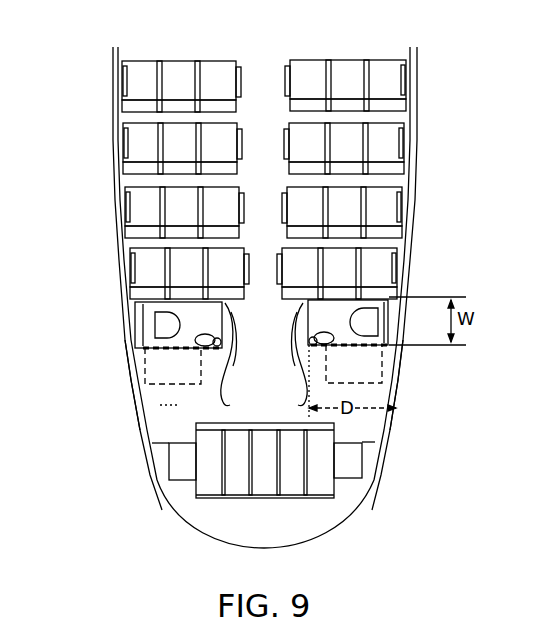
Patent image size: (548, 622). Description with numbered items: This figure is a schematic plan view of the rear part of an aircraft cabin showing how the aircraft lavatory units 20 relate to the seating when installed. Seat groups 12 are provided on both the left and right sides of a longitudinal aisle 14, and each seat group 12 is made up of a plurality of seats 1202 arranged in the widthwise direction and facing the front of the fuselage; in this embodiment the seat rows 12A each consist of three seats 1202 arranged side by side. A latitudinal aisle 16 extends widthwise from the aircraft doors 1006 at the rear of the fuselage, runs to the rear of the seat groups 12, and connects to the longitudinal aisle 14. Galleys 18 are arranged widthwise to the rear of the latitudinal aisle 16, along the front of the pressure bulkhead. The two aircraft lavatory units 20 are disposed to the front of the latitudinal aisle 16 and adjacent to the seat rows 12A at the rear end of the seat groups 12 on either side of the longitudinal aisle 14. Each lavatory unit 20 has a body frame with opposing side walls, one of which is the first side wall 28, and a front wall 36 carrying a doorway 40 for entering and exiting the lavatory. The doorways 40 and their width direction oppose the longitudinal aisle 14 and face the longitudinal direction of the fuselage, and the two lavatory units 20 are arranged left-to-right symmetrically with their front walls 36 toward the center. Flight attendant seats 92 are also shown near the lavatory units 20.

The longitudinal aisle 14 is at (263, 90).
The seat groups 12 is at (397, 87).
The seats 1202 is at (220, 128).
The seat rows 12A is at (132, 203).
The first side wall 28 is at (265, 232).
The aircraft lavatory unit 20 is at (153, 318).
The flight attendant seats 92 is at (145, 378).
The doorway 40 is at (264, 352).
The front wall 36 is at (264, 401).
The aircraft doors 1006 is at (133, 397).
The latitudinal aisle 16 is at (160, 405).
The galleys 18 is at (209, 492).